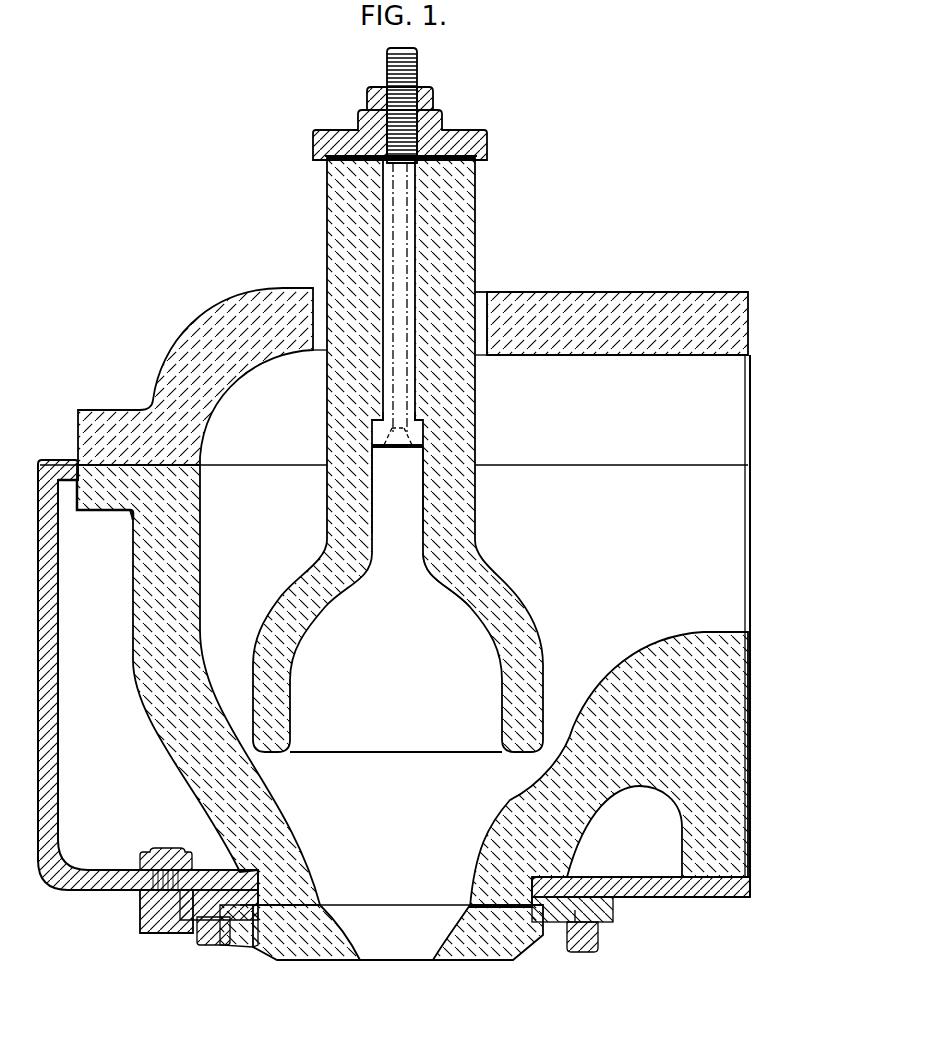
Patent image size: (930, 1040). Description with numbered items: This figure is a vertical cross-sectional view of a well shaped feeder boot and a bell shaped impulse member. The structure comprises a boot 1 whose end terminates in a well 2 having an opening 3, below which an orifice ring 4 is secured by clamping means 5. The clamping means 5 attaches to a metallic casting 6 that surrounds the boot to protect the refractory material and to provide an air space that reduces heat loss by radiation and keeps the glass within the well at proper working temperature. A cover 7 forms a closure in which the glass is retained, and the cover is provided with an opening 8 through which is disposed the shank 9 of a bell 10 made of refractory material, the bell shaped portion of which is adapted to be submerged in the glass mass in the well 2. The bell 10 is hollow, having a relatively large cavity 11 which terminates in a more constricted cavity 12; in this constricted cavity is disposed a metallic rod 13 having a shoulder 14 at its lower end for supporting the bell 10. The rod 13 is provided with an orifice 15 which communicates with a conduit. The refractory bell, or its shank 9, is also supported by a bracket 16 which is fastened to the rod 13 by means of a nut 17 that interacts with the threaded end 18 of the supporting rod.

The boot 1 is at (696, 858).
The well 2 is at (492, 812).
The opening 3 is at (386, 905).
The orifice ring 4 is at (468, 962).
The clamping means 5 is at (158, 932).
The metallic casting 6 is at (60, 800).
The cover 7 is at (598, 292).
The opening 8 is at (482, 292).
The shank 9 is at (477, 206).
The bell 10 is at (537, 642).
The cavity 11 is at (488, 650).
The constricted cavity 12 is at (422, 468).
The metallic rod 13 is at (388, 196).
The shoulder 14 is at (420, 433).
The orifice 15 is at (401, 445).
The bracket 16 is at (487, 143).
The nut 17 is at (434, 97).
The threaded end 18 is at (387, 60).